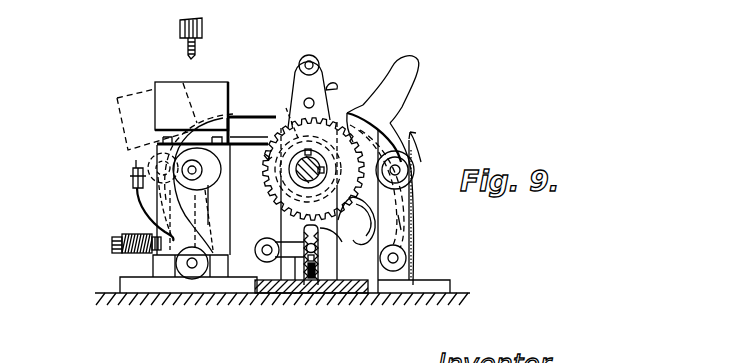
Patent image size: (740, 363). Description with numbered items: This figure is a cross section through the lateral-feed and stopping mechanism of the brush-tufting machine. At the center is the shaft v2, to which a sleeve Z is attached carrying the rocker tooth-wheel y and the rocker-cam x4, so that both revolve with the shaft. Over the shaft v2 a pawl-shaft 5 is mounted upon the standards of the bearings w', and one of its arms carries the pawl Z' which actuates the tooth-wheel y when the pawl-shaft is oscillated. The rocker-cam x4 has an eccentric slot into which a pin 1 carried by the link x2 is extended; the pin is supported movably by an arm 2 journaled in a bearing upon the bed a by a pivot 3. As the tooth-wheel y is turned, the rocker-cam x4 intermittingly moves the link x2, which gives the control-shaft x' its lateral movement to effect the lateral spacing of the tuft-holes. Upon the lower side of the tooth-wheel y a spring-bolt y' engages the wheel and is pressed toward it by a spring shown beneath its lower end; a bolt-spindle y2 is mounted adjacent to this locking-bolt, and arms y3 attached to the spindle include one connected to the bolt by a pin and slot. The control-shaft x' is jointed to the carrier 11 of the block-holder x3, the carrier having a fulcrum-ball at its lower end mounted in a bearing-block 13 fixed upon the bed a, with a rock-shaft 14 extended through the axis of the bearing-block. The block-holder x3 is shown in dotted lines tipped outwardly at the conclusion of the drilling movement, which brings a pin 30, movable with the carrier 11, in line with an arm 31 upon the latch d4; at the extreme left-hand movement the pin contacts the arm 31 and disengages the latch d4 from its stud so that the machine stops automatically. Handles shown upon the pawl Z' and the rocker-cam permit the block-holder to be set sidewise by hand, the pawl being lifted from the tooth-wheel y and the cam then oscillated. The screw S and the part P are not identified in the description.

The set screw S is at (179, 28).
The screw P is at (196, 47).
The block-holder x3 is at (165, 83).
The link x2 is at (254, 117).
The pawl Z' is at (300, 123).
The pawl-shaft 5 is at (309, 55).
The rocker-cam x4 is at (395, 125).
The pin 1 is at (409, 168).
The arm 2 is at (402, 228).
The pivot 3 is at (396, 257).
The bed a is at (425, 280).
The pin 30 is at (138, 166).
The arm 31 is at (135, 198).
The sleeve Z is at (300, 169).
The shaft v2 is at (296, 174).
The control-shaft x' is at (199, 183).
The bolt-spindle y2 is at (267, 247).
The tooth-wheel y is at (346, 221).
The spring-bolt y' is at (339, 242).
The latch d4 is at (150, 257).
The bearing-block 13 is at (156, 267).
The rock-shaft 14 is at (192, 268).
The carrier 11 is at (215, 237).
The arms y3 is at (308, 284).
The bearings w' is at (282, 308).